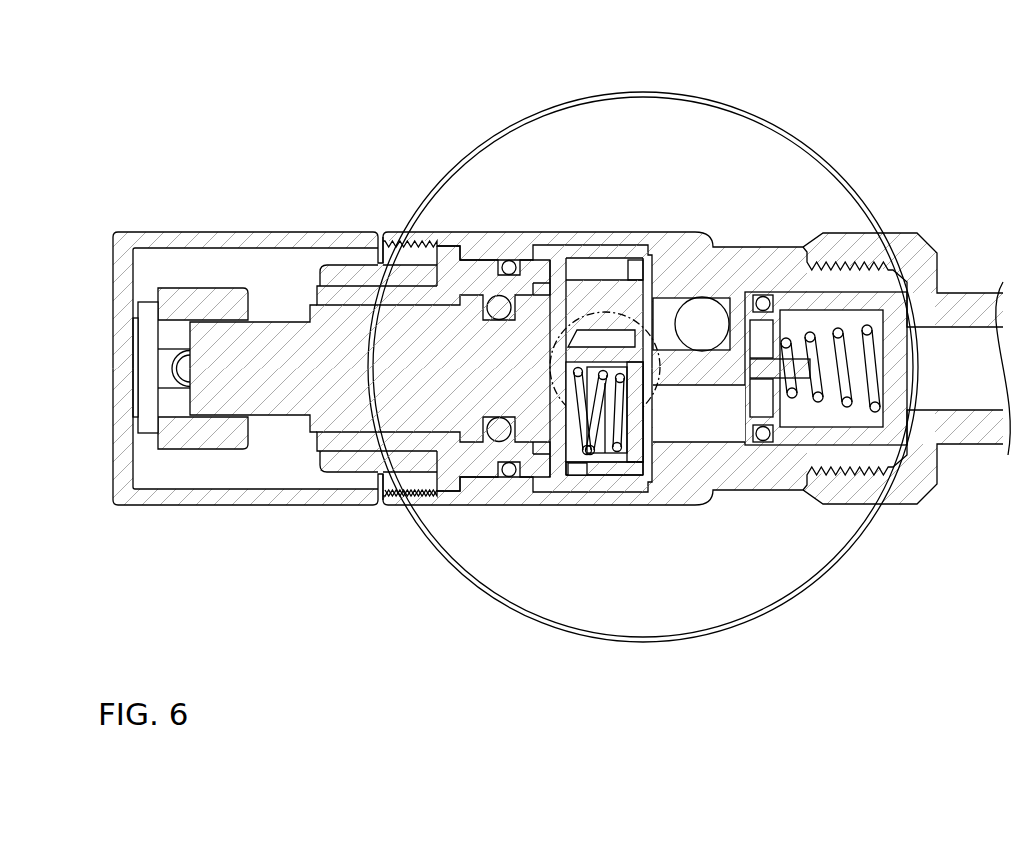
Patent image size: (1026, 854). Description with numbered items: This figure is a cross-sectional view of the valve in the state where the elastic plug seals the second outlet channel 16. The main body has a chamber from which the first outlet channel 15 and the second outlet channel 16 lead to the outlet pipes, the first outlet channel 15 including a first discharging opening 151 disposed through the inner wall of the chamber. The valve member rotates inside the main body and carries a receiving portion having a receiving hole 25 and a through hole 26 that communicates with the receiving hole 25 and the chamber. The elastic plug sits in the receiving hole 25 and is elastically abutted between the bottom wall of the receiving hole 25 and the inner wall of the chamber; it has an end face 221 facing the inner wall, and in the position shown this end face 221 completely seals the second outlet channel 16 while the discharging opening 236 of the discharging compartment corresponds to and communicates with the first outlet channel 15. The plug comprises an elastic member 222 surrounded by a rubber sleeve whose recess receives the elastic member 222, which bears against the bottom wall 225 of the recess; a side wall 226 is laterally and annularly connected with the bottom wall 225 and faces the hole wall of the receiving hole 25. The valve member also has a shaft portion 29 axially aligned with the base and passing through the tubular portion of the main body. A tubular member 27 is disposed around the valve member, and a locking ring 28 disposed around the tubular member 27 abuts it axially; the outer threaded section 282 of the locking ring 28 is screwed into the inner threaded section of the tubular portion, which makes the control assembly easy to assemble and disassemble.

The first outlet channel 15 is at (673, 305).
The first discharging opening 151 is at (660, 300).
The second outlet channel 16 is at (727, 427).
The end face 221 is at (653, 420).
The elastic member 222 is at (590, 455).
The bottom wall 225 is at (633, 455).
The side wall 226 is at (612, 462).
The discharging opening 236 is at (615, 315).
The receiving hole 25 is at (582, 423).
The through hole 26 is at (572, 465).
The tubular member 27 is at (450, 250).
The locking ring 28 is at (342, 458).
The outer threaded section 282 is at (398, 497).
The shaft portion 29 is at (360, 325).